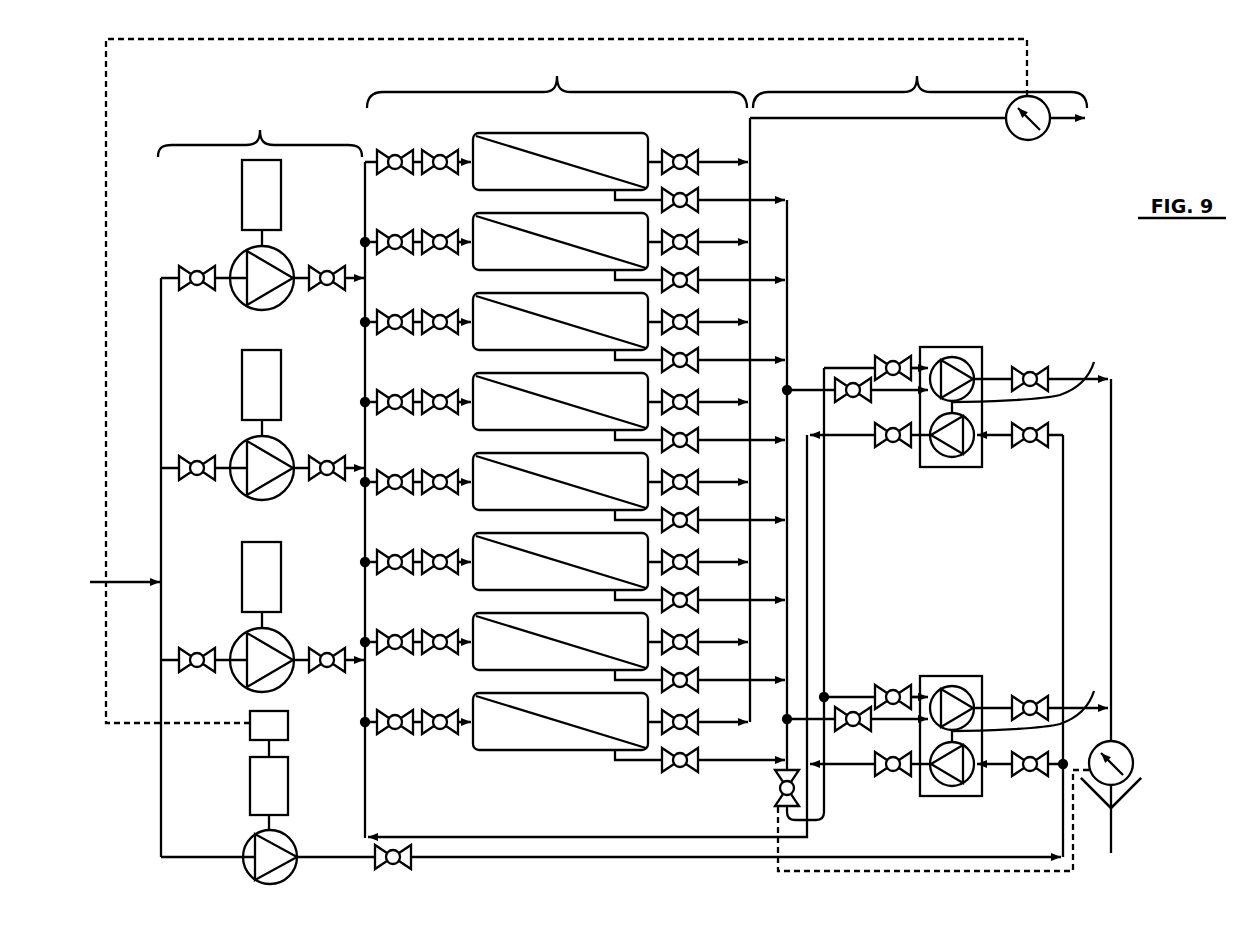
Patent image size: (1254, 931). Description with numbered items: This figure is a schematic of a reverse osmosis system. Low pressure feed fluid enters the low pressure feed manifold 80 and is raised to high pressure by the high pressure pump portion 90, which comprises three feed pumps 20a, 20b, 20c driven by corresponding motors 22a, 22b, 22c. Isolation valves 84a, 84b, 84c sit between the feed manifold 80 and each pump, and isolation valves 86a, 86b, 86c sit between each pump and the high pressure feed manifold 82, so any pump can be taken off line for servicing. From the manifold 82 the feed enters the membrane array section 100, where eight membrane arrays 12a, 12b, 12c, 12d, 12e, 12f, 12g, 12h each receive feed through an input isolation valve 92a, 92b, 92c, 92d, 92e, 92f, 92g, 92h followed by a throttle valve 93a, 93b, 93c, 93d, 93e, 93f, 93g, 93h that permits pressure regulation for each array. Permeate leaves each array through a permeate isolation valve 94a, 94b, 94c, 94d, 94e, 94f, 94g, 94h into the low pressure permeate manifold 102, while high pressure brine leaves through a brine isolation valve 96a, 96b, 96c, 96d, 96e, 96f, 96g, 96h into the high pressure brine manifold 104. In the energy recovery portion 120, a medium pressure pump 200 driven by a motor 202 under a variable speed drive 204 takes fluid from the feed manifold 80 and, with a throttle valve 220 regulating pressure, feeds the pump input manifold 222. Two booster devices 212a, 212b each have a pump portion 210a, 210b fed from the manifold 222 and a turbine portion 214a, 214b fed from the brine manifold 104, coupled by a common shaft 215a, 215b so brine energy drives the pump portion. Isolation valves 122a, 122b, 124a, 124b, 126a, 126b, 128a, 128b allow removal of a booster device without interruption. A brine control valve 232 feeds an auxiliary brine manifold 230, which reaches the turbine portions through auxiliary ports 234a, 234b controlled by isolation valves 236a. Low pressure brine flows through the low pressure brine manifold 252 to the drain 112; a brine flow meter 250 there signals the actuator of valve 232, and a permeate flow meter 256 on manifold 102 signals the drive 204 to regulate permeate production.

The high pressure pump portion 90 is at (260, 129).
The membrane array section 100 is at (557, 78).
The energy recovery portion 120 is at (920, 78).
The low pressure feed manifold 80 is at (161, 392).
The motor 22a is at (250, 162).
The motor 22b is at (250, 350).
The motor 22c is at (250, 542).
The isolation valve 84a is at (196, 266).
The isolation valve 84b is at (196, 456).
The isolation valve 84c is at (196, 648).
The isolation valve 86a is at (326, 266).
The isolation valve 86b is at (326, 456).
The isolation valve 86c is at (326, 648).
The feed pump 20a is at (262, 310).
The feed pump 20b is at (262, 500).
The feed pump 20c is at (262, 692).
The input isolation valve 92a is at (394, 150).
The input isolation valve 92b is at (394, 230).
The input isolation valve 92c is at (394, 310).
The input isolation valve 92d is at (394, 390).
The input isolation valve 92e is at (394, 470).
The input isolation valve 92f is at (394, 550).
The input isolation valve 92g is at (394, 630).
The input isolation valve 92h is at (394, 710).
The throttle valve 93a is at (440, 150).
The throttle valve 93b is at (440, 230).
The throttle valve 93c is at (440, 310).
The throttle valve 93d is at (440, 390).
The throttle valve 93e is at (440, 470).
The throttle valve 93f is at (440, 550).
The throttle valve 93g is at (440, 630).
The throttle valve 93h is at (440, 710).
The membrane array 12a is at (540, 133).
The membrane array 12b is at (541, 213).
The membrane array 12c is at (541, 293).
The membrane array 12d is at (541, 373).
The membrane array 12e is at (541, 453).
The membrane array 12f is at (541, 533).
The membrane array 12g is at (541, 613).
The membrane array 12h is at (541, 693).
The permeate isolation valve 94a is at (683, 150).
The permeate isolation valve 94b is at (690, 230).
The permeate isolation valve 94c is at (690, 310).
The permeate isolation valve 94d is at (690, 390).
The permeate isolation valve 94e is at (690, 470).
The permeate isolation valve 94f is at (690, 550).
The permeate isolation valve 94g is at (690, 630).
The permeate isolation valve 94h is at (690, 710).
The brine isolation valve 96a is at (690, 188).
The brine isolation valve 96b is at (690, 268).
The brine isolation valve 96c is at (690, 348).
The brine isolation valve 96d is at (690, 428).
The brine isolation valve 96e is at (690, 508).
The brine isolation valve 96f is at (690, 588).
The brine isolation valve 96g is at (690, 668).
The brine isolation valve 96h is at (690, 748).
The high pressure feed manifold 82 is at (365, 783).
The low pressure permeate manifold 102 is at (858, 118).
The high pressure brine manifold 104 is at (787, 199).
The permeate flow meter 256 is at (1024, 139).
The isolation valve 122a is at (855, 378).
The isolation valve 122b is at (853, 707).
The isolation valve 236a is at (890, 356).
The auxiliary port 234a is at (912, 366).
The auxiliary port 234b is at (912, 695).
The turbine portion 214a is at (944, 358).
The turbine portion 214b is at (944, 687).
The booster device 212a is at (965, 347).
The booster device 212b is at (965, 676).
The isolation valve 126a is at (1033, 368).
The isolation valve 126b is at (1033, 697).
The common shaft 215a is at (1039, 369).
The common shaft 215b is at (1038, 698).
The isolation valve 124a is at (1040, 423).
The isolation valve 124b is at (1030, 777).
The isolation valve 128a is at (890, 447).
The isolation valve 128b is at (890, 777).
The pump portion 210a is at (952, 457).
The pump portion 210b is at (952, 786).
The low pressure brine manifold 252 is at (1111, 597).
The brine flow meter 250 is at (1126, 746).
The drain 112 is at (1112, 822).
The brine control valve 232 is at (775, 789).
The auxiliary brine manifold 230 is at (785, 826).
The pump input manifold 222 is at (535, 858).
The throttle valve 220 is at (380, 848).
The medium pressure pump 200 is at (246, 842).
The motor 202 is at (288, 785).
The variable speed drive 204 is at (288, 722).